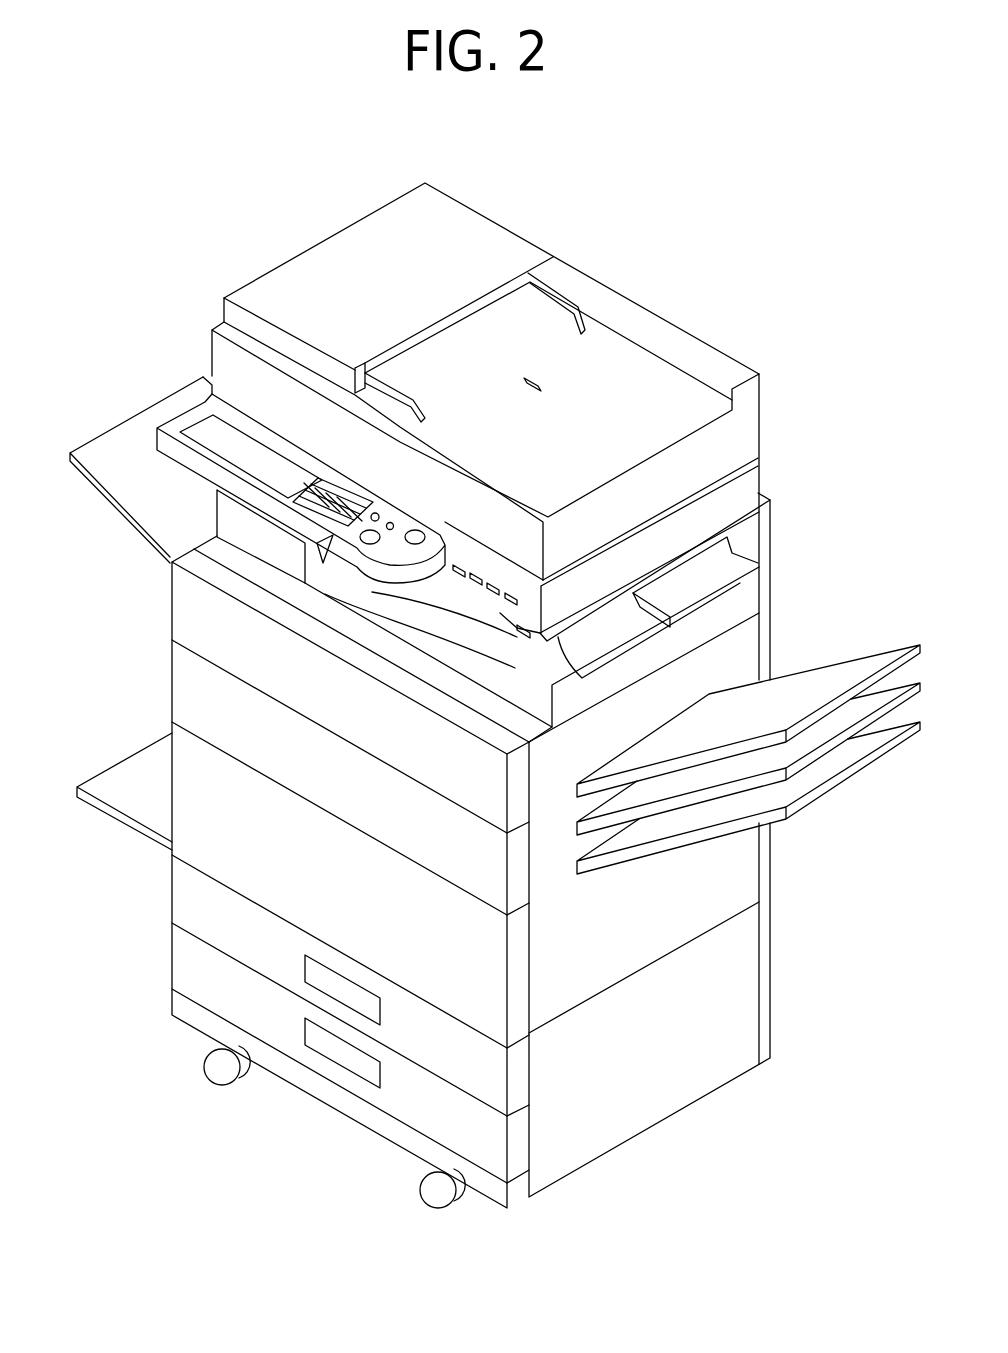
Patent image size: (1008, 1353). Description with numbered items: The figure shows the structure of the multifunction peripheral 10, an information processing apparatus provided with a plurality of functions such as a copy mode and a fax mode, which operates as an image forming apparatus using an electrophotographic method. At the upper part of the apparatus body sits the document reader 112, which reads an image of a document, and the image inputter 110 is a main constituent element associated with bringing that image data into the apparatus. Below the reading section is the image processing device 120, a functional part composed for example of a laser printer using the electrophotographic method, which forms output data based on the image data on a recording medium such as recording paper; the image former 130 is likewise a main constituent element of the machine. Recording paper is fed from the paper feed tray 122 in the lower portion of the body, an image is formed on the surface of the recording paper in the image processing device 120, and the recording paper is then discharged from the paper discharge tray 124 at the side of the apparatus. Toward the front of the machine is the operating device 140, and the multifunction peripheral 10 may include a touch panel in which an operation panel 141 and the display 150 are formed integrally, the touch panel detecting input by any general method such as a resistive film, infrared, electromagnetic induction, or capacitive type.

The multifunction peripheral 10 is at (788, 272).
The image inputter 110 is at (779, 455).
The document reader 112 is at (663, 531).
The image processing device 120 is at (156, 680).
The image former 130 is at (471, 872).
The paper feed tray 122 is at (156, 962).
The paper discharge tray 124 is at (817, 638).
The operating device 140 is at (291, 513).
The operation panel 141 is at (200, 422).
The display 150 is at (251, 456).